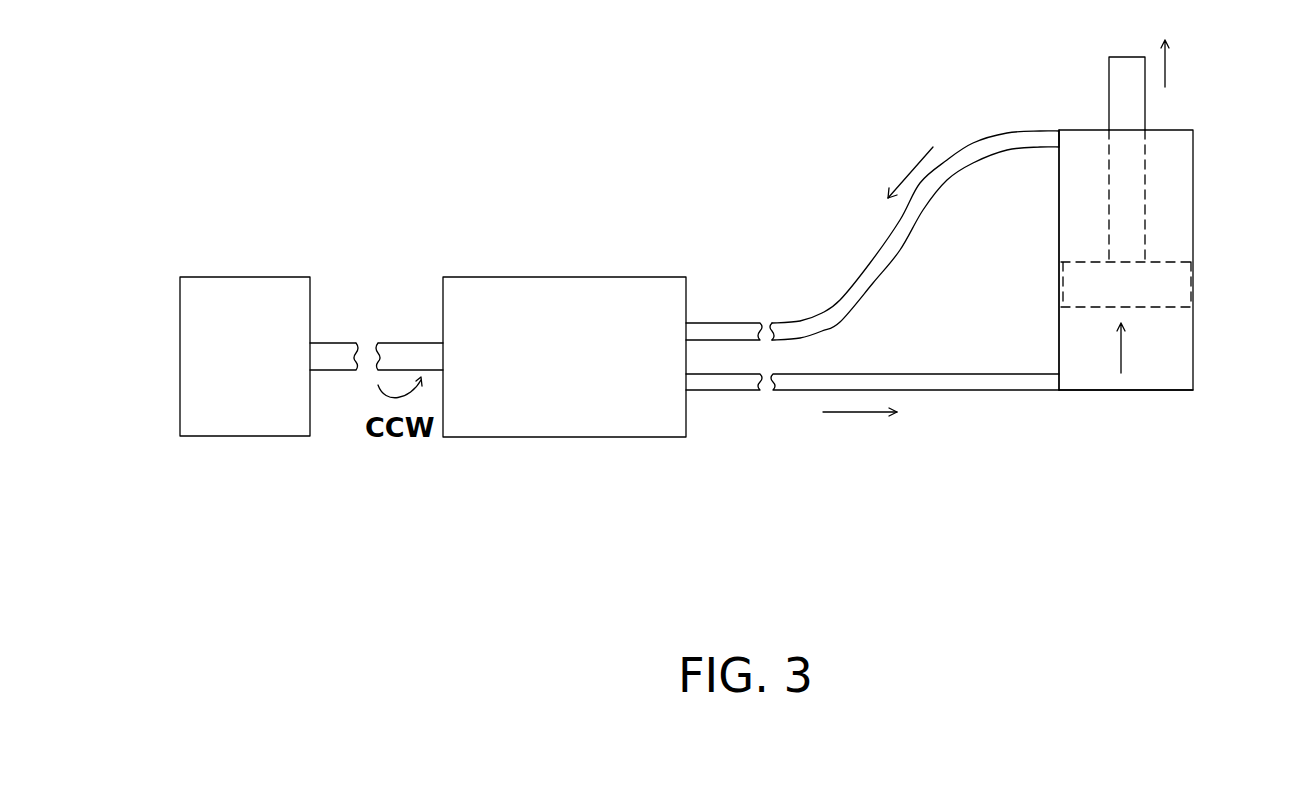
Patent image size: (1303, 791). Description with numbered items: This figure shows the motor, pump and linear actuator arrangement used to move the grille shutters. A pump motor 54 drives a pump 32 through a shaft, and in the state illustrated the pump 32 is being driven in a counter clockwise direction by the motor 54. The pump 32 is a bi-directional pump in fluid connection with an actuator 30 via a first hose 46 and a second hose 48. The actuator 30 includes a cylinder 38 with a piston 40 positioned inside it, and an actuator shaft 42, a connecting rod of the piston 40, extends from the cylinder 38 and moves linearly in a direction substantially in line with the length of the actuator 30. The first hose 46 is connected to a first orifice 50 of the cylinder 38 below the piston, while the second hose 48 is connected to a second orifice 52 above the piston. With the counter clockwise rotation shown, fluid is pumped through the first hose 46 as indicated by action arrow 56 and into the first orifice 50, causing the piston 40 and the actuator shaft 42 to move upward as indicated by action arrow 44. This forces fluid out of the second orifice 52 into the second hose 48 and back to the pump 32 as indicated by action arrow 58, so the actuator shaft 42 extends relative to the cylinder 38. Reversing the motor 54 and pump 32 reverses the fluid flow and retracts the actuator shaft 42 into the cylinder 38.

The actuator 30 is at (1136, 400).
The pump 32 is at (540, 437).
The cylinder 38 is at (1193, 367).
The piston 40 is at (1193, 285).
The actuator shaft 42 is at (1146, 108).
The action arrow 44 is at (1170, 68).
The first hose 46 is at (977, 390).
The second hose 48 is at (838, 300).
The first orifice 50 is at (1059, 390).
The second orifice 52 is at (1059, 130).
The pump motor 54 is at (230, 437).
The action arrow 56 is at (845, 412).
The action arrow 58 is at (907, 170).